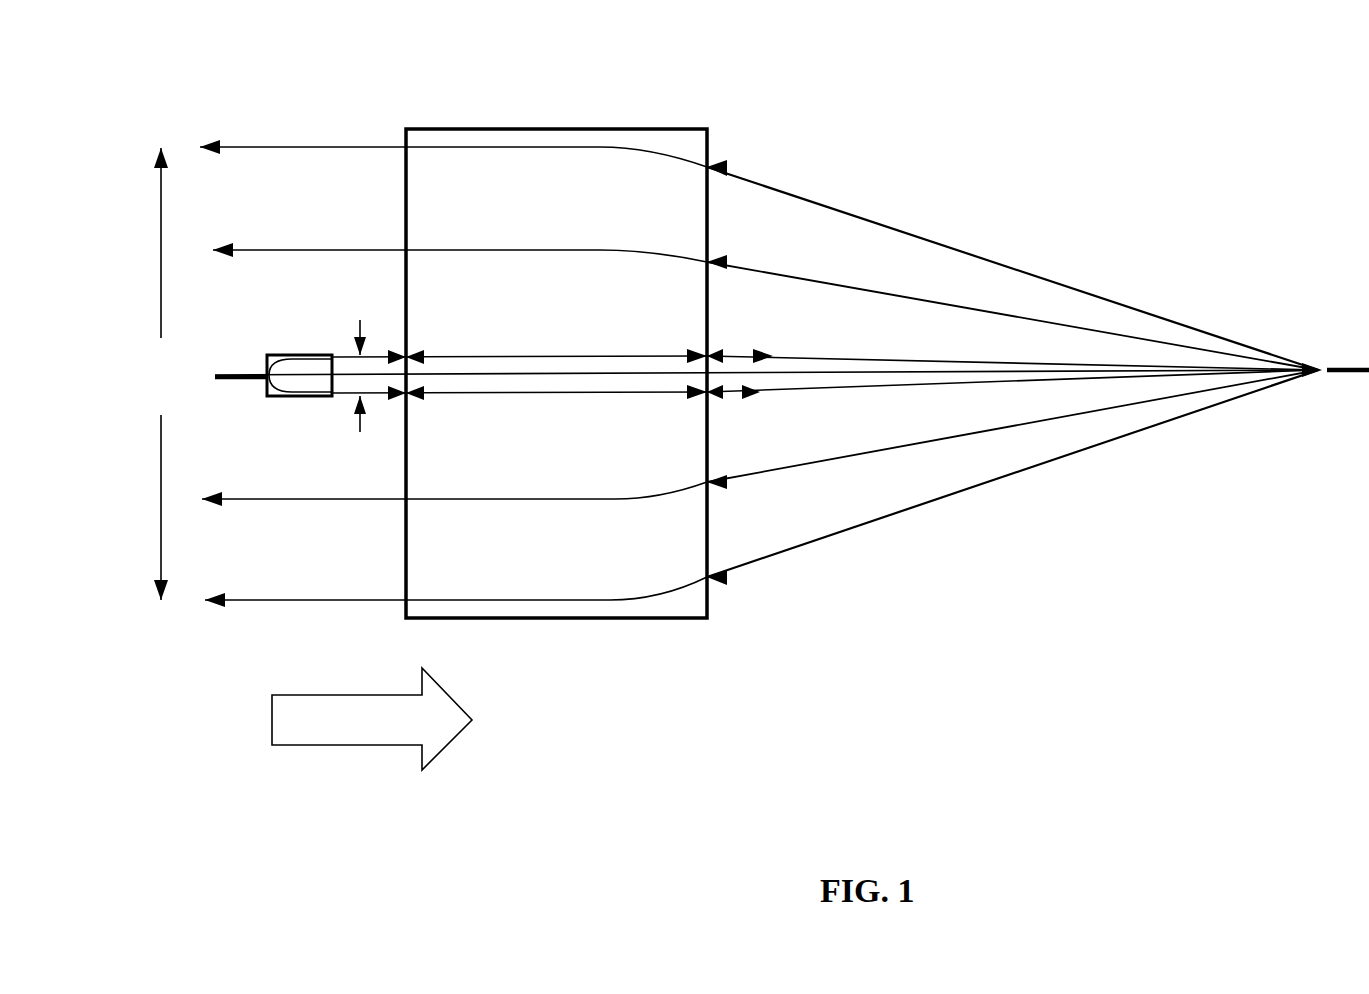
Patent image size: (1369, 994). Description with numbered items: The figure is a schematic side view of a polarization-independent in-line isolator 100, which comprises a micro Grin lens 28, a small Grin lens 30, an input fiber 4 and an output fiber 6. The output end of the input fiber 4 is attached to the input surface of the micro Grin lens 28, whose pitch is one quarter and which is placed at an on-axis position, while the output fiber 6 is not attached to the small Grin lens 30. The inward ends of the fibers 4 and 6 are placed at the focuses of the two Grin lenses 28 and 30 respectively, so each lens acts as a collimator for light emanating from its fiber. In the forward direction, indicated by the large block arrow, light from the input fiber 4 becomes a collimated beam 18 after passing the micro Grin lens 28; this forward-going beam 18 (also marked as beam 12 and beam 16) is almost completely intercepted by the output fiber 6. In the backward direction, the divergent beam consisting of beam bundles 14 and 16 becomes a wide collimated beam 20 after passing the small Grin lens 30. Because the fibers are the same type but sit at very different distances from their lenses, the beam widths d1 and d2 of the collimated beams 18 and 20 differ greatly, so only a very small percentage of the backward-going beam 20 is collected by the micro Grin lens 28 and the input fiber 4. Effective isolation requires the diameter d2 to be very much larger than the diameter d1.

The polarization-independent in-line isolator 100 is at (1155, 118).
The small Grin lens 30 is at (508, 124).
The beam bundle 14 is at (1005, 262).
The output fiber 6 is at (1365, 360).
The micro Grin lens 28 is at (302, 354).
The forward-going beam 12 is at (615, 346).
The beam bundle 16 is at (743, 348).
The input fiber 4 is at (222, 386).
The collimated beam 18 is at (343, 398).
The collimated beam 20 is at (353, 598).
The diameter of the forward-going beam d1 is at (368, 357).
The diameter of the backward-going beam d2 is at (166, 374).